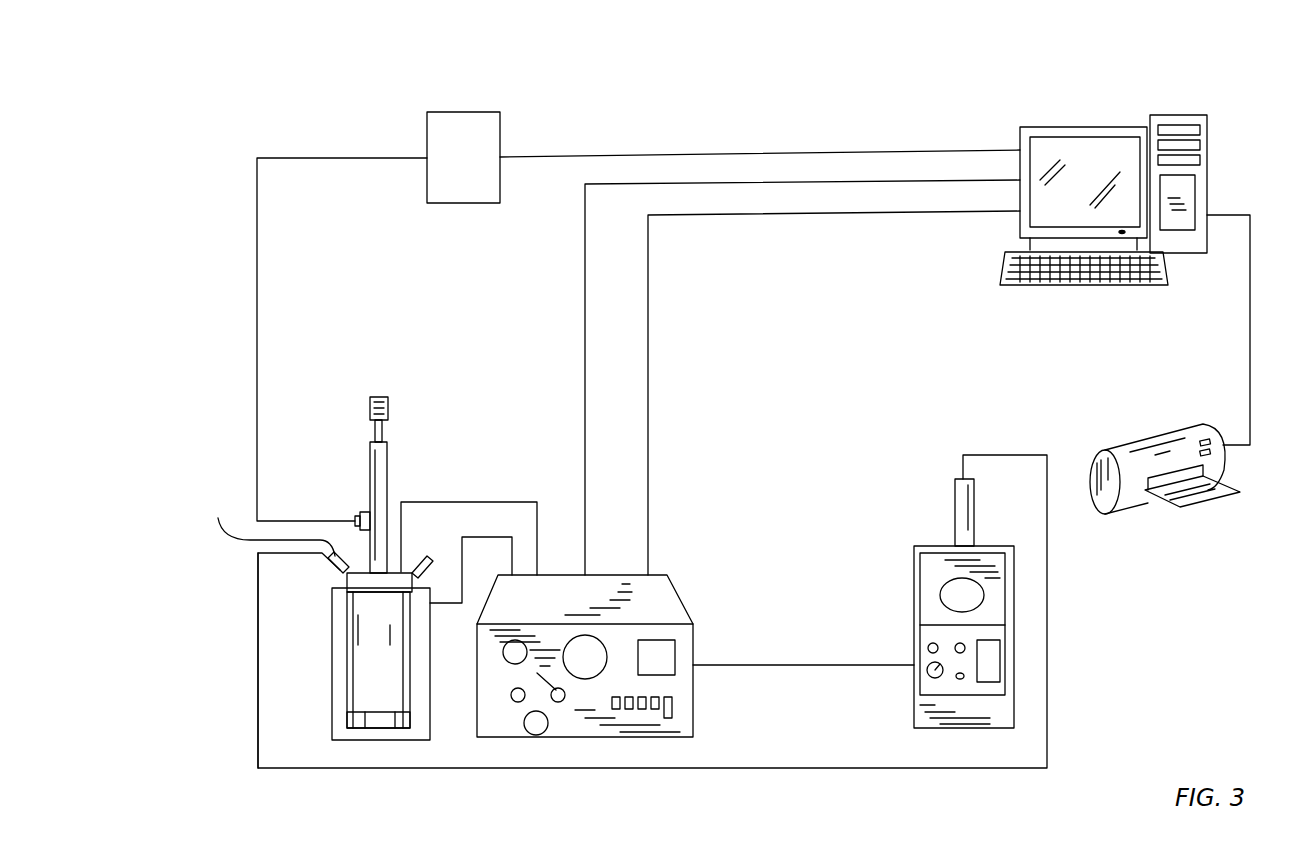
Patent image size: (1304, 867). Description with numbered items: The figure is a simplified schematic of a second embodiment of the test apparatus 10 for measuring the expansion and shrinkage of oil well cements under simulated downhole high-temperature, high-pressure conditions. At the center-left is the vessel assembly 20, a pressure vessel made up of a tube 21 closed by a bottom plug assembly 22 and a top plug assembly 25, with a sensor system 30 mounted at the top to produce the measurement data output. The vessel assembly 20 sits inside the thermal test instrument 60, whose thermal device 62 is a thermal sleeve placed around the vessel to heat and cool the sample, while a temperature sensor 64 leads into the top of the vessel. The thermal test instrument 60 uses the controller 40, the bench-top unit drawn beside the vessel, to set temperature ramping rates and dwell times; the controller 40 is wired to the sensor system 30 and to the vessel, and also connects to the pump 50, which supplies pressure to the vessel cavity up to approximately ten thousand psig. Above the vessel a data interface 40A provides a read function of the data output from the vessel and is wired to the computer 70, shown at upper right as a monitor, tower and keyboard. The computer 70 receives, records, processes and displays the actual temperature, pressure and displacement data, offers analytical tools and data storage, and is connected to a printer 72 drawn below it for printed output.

The test apparatus 10 is at (168, 126).
The vessel assembly 20 is at (410, 412).
The tube 21 is at (347, 627).
The bottom plug assembly 22 is at (413, 722).
The top plug assembly 25 is at (397, 570).
The sensor system 30 is at (346, 508).
The controller 40 is at (693, 688).
The data interface 40A is at (427, 138).
The pump 50 is at (914, 596).
The thermal test instrument 60 is at (322, 726).
The thermal device 62 is at (333, 672).
The temperature sensor 64 is at (276, 531).
The computer 70 is at (1222, 130).
The printer 72 is at (1140, 440).